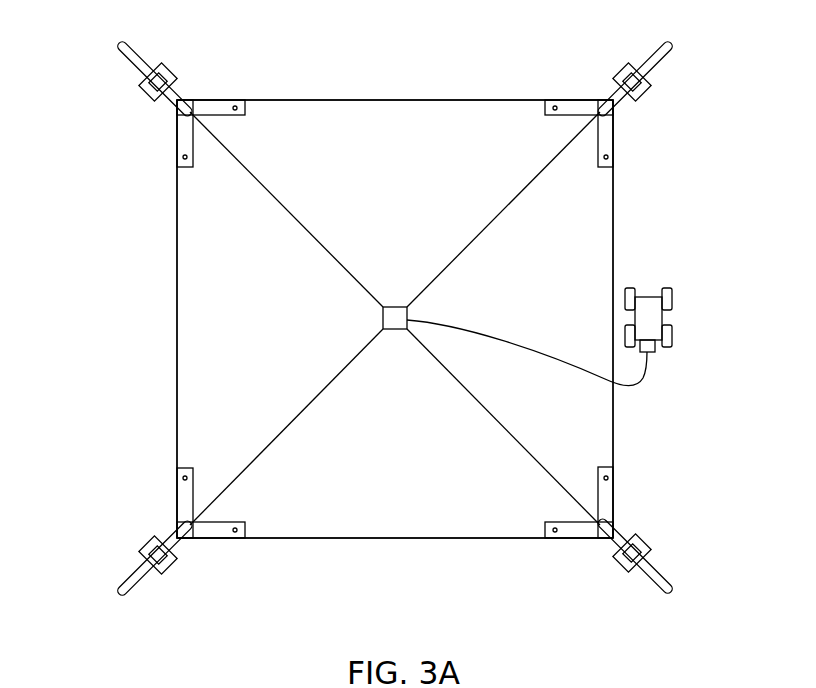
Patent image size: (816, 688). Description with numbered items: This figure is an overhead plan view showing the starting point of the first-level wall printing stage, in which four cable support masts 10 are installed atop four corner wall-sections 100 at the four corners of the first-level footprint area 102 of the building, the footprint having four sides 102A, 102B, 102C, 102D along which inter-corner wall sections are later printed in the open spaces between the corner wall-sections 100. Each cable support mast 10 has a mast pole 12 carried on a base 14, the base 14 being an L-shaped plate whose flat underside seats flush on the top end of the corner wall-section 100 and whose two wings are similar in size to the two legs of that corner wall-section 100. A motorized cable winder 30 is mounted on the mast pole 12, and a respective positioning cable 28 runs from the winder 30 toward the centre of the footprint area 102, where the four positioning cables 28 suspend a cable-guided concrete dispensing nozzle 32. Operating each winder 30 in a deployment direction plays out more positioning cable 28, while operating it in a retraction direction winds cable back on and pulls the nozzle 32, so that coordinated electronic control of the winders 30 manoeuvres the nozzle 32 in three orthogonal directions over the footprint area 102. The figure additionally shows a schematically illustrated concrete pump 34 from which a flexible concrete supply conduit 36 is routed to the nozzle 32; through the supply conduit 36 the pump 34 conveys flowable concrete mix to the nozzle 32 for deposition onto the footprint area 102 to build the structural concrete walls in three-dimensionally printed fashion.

The cable support mast 10 is at (112, 77).
The mast pole 12 is at (132, 50).
The base 14 is at (224, 97).
The positioning cable 28 is at (307, 228).
The motorized cable winder 30 is at (150, 101).
The concrete dispensing nozzle 32 is at (395, 334).
The concrete pump 34 is at (655, 326).
The concrete supply conduit 36 is at (500, 333).
The corner wall-section 100 is at (170, 150).
The first-level footprint area 102 is at (353, 437).
The first side of footprint area 102A is at (367, 100).
The second side of footprint area 102B is at (173, 312).
The third side of footprint area 102C is at (408, 540).
The fourth side of footprint area 102D is at (615, 257).